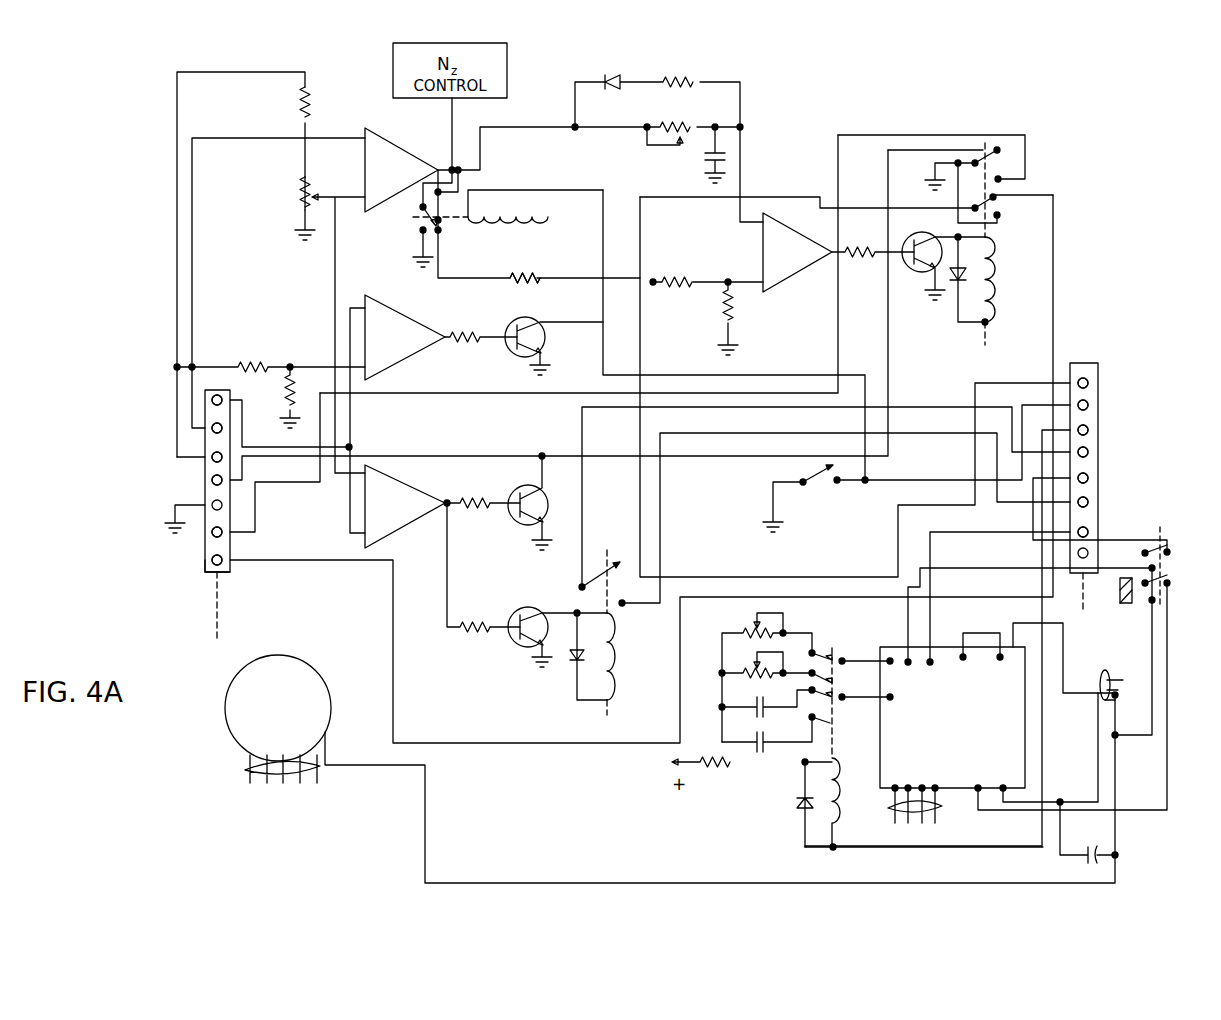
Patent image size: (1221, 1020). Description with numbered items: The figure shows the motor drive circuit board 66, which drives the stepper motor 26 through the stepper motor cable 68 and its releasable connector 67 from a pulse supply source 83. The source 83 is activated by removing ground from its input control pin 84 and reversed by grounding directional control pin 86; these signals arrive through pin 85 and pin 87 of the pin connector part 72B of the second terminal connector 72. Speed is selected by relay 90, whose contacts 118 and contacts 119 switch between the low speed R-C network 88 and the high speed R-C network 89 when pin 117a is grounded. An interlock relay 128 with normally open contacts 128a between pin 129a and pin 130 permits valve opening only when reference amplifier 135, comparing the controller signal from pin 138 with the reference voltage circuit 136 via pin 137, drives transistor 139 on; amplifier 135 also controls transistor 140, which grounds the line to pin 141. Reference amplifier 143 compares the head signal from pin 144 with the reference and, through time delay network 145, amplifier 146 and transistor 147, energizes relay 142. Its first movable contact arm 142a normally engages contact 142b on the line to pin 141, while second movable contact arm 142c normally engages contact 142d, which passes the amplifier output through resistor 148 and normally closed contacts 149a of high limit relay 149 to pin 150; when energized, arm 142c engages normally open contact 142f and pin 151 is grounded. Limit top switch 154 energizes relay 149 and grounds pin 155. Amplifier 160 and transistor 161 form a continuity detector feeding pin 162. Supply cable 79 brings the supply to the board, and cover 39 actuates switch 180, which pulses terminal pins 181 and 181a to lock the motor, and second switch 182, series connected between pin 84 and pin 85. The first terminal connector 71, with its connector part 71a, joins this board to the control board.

The reference voltage circuit 136 is at (303, 163).
The IC reference amplifier 143 is at (407, 179).
The high limit relay 149 is at (423, 212).
The normally closed relay contacts 149a is at (450, 225).
The resistor 148 is at (530, 276).
The signal time delay network 145 is at (682, 179).
The motor drive circuit board 66 is at (848, 92).
The IC amplifier 146 is at (805, 266).
The transistor 147 is at (928, 234).
The relay 142 is at (1000, 270).
The first movable contact arm 142a is at (985, 165).
The relay contact 142b is at (997, 148).
The second movable contact arm 142c is at (1000, 208).
The relay contact 142d is at (1005, 195).
The normally open relay contact 142f is at (1003, 217).
The pin connector part 72B is at (1080, 360).
The second terminal connector 72 is at (1084, 602).
The connector pin 162 is at (1095, 385).
The connector pin 155 is at (1095, 407).
The connector pin 117a is at (1095, 431).
The connector pin 129a is at (1095, 453).
The connector pin 85 is at (1095, 479).
The connector pin 130 is at (1095, 503).
The connector pin 87 is at (1095, 532).
The second switch 182 is at (1165, 560).
The normally open switch 180 is at (1162, 600).
The cover 39 is at (1126, 604).
The pulse supply source 83 is at (1018, 694).
The input control pin 84 is at (904, 668).
The directional control pin 86 is at (933, 668).
The terminal pin 181 is at (980, 785).
The terminal pin 181a is at (1005, 785).
The supply cable 79 is at (1104, 670).
The stepper motor cable 68 is at (890, 806).
The low speed R-C network 88 is at (722, 673).
The relay contacts 118 is at (818, 650).
The relay contacts 119 is at (834, 680).
The high speed R-C network 89 is at (775, 723).
The multiple pin releasable connector 67 is at (855, 782).
The speed relay 90 is at (822, 822).
The first terminal connector 71 is at (218, 519).
The connector part 71a is at (208, 572).
The connector pin 138 is at (212, 402).
The connector pin 144 is at (212, 427).
The connector pin 137 is at (212, 459).
The connector pin 141 is at (212, 480).
The connector pin 151 is at (212, 533).
The connector pin 150 is at (210, 565).
The reference amplifier 160 is at (407, 347).
The transistor 161 is at (547, 338).
The reference amplifier 135 is at (407, 514).
The transistor 140 is at (522, 490).
The transistor 139 is at (524, 614).
The interlock relay 128 is at (615, 660).
The normally open relay contacts 128a is at (612, 560).
The limit top switch 154 is at (815, 493).
The stepper motor 26 is at (267, 737).